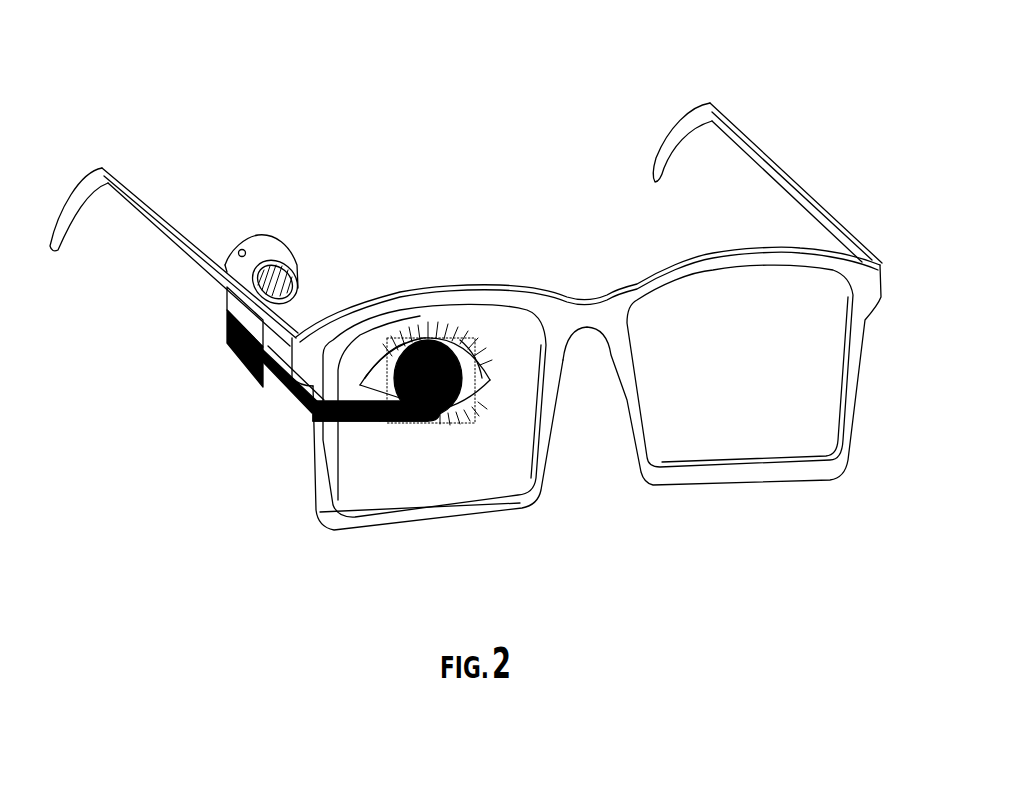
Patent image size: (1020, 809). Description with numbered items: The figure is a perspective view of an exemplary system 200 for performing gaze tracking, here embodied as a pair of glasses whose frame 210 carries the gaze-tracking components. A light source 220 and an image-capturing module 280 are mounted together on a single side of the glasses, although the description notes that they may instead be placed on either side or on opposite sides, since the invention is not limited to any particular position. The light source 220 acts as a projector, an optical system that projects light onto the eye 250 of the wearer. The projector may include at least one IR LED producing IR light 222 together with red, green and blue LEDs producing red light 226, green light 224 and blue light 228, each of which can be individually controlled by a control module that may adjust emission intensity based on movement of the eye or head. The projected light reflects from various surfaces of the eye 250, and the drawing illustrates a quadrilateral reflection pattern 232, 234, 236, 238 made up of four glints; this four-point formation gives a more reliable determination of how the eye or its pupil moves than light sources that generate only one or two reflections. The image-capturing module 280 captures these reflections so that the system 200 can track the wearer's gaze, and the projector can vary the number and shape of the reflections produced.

The exemplary system 200 is at (257, 108).
The frame 210 is at (128, 186).
The light source 220 is at (228, 348).
The IR light 222 is at (333, 428).
The green light 224 is at (343, 428).
The red light 226 is at (368, 428).
The blue light 228 is at (421, 430).
The quadrilateral reflection pattern 232 is at (311, 408).
The quadrilateral reflection pattern 234 is at (452, 425).
The quadrilateral reflection pattern 236 is at (480, 403).
The quadrilateral reflection pattern 238 is at (386, 352).
The eye 250 is at (381, 360).
The image-capturing module 280 is at (224, 260).